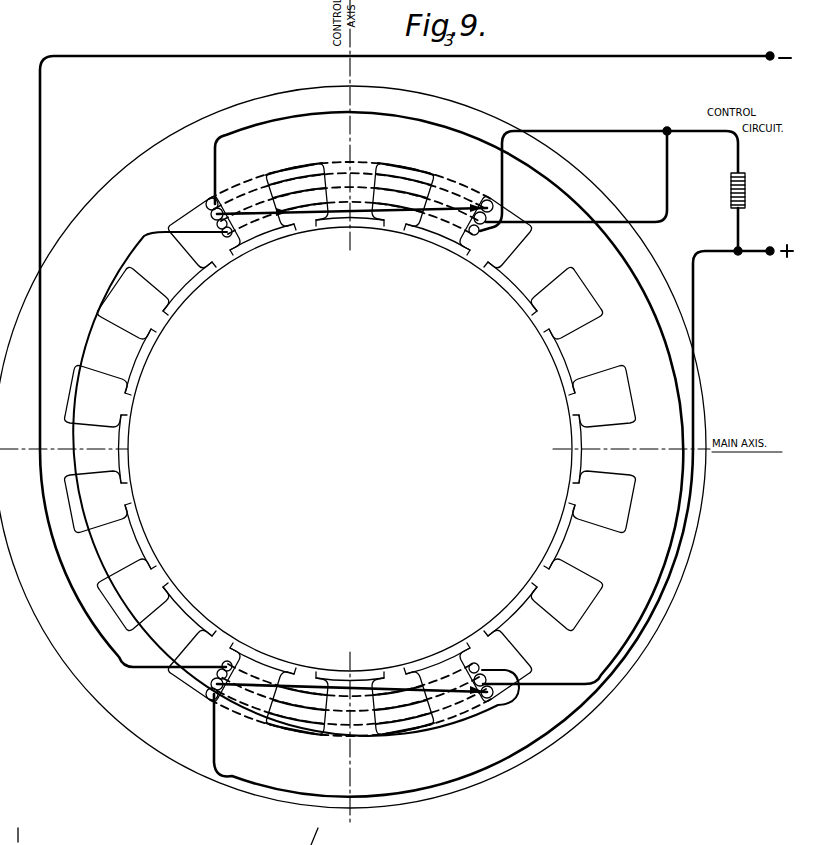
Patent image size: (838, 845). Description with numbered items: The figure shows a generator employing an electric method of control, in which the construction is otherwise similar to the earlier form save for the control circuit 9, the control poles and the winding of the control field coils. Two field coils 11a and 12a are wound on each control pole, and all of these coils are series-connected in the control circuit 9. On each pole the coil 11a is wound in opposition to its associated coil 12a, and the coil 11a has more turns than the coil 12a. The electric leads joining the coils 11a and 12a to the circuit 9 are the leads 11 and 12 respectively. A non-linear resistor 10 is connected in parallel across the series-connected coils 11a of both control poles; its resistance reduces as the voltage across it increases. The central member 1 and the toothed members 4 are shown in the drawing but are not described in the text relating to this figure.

The rotor 1 is at (353, 447).
The stator pole teeth 4 is at (350, 449).
The control circuit 9 is at (416, 419).
The non-linear resistor 10 is at (731, 206).
The electric lead 11 is at (576, 176).
The electric lead 12 is at (609, 171).
The field coil 11a is at (388, 183).
The field coil 12a is at (342, 197).